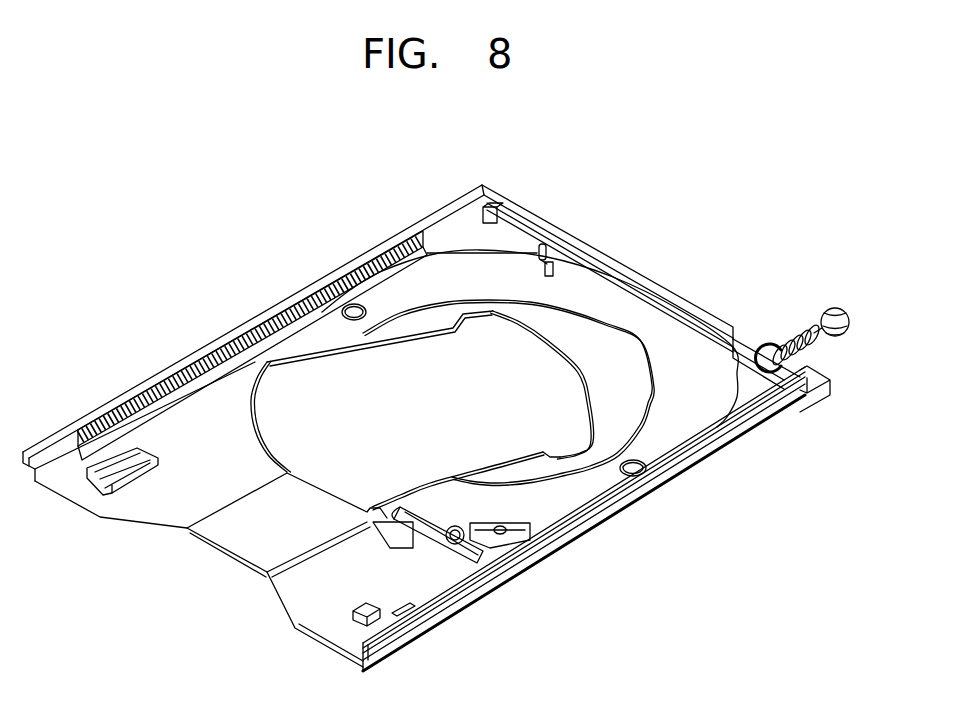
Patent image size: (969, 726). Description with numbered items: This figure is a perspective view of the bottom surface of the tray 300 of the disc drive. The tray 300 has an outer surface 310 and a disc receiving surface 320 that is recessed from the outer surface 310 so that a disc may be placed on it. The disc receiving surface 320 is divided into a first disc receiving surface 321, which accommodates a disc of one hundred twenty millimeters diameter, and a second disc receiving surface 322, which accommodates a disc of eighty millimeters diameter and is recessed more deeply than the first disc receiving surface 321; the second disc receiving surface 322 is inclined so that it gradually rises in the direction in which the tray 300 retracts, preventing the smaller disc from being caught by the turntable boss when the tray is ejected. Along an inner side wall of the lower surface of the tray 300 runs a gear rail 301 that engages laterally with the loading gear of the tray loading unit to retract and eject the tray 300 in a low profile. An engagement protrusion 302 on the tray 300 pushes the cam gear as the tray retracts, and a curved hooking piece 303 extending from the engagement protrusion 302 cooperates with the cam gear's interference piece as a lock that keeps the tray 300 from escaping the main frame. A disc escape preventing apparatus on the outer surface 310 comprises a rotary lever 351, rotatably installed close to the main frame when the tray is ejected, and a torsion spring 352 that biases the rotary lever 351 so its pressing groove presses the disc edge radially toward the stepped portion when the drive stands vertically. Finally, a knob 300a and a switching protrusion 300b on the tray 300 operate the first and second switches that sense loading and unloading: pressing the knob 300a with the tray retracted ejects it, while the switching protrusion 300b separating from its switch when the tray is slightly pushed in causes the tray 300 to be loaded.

The tray 300 is at (697, 525).
The knob 300a is at (836, 308).
The switching protrusion 300b is at (343, 600).
The gear rail 301 is at (372, 254).
The engagement protrusion 302 is at (556, 258).
The hooking piece 303 is at (546, 245).
The outer surface 310 is at (407, 585).
The disc receiving surface 320 is at (496, 345).
The first disc receiving surface 321 is at (688, 337).
The second disc receiving surface 322 is at (613, 340).
The rotary lever 351 is at (500, 555).
The torsion spring 352 is at (538, 541).